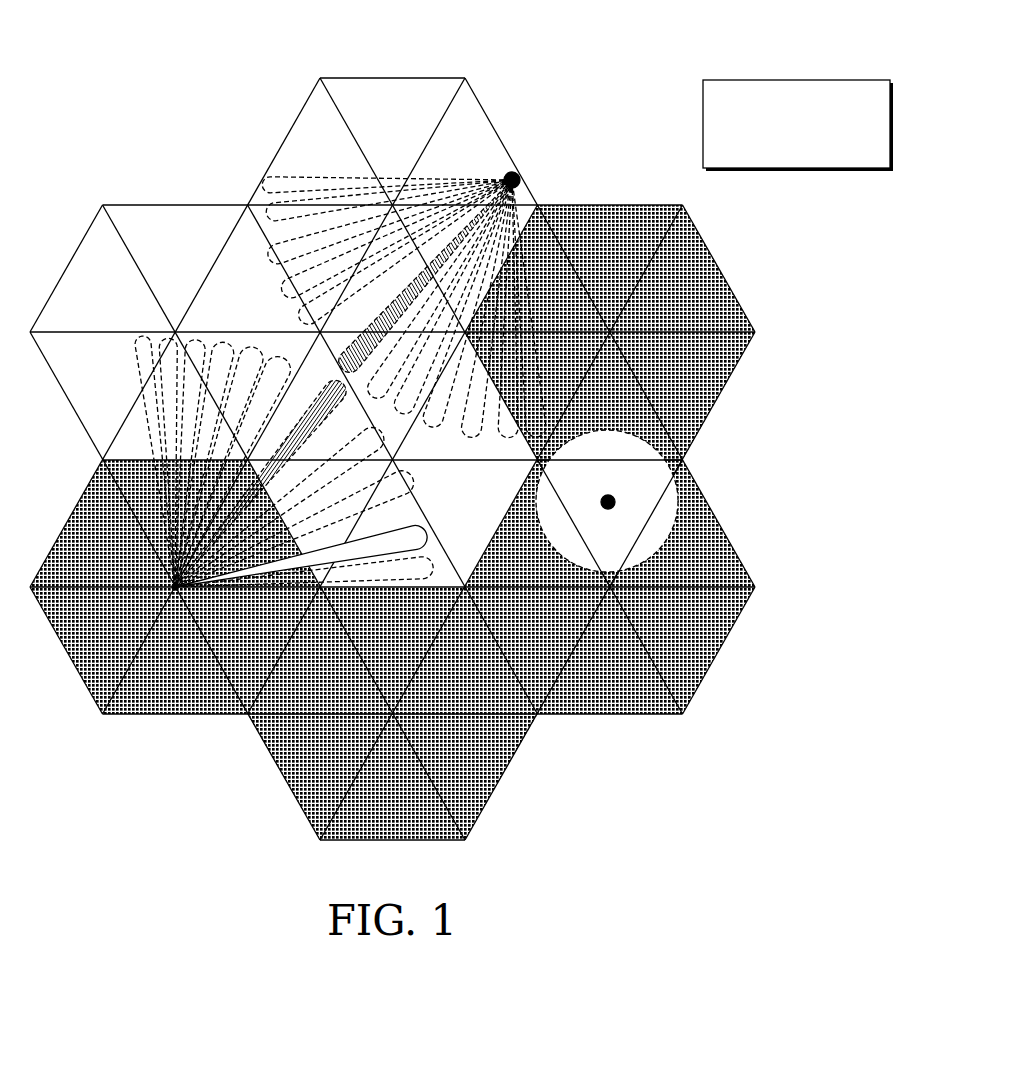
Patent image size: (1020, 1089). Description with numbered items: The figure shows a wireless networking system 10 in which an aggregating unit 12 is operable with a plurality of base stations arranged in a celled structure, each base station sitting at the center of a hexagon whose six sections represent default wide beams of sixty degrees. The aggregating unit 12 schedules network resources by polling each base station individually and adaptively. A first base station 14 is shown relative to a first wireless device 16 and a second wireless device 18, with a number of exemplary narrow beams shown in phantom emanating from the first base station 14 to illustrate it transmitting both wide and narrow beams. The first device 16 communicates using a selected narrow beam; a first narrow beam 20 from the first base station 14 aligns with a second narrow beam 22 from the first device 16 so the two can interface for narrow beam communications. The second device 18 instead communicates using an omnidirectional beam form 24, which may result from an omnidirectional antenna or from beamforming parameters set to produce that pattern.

The wireless networking system 10 is at (165, 78).
The aggregating unit 12 is at (797, 80).
The first base station 14 is at (173, 585).
The first wireless device 16 is at (517, 176).
The second wireless device 18 is at (617, 502).
The first narrow beam 20 is at (288, 382).
The second narrow beam 22 is at (527, 203).
The omnidirectional beam form 24 is at (680, 518).